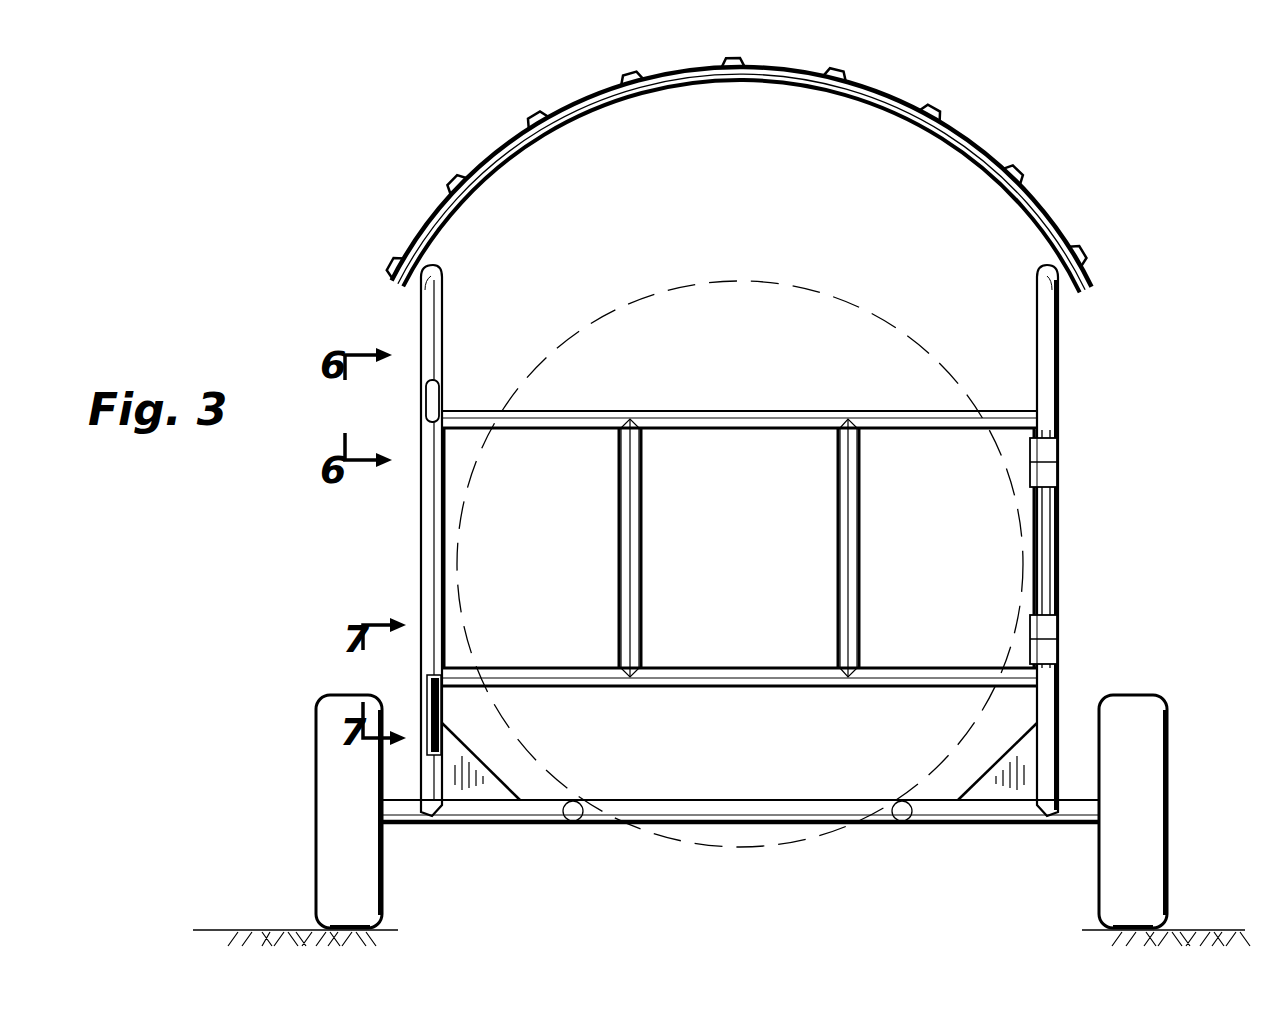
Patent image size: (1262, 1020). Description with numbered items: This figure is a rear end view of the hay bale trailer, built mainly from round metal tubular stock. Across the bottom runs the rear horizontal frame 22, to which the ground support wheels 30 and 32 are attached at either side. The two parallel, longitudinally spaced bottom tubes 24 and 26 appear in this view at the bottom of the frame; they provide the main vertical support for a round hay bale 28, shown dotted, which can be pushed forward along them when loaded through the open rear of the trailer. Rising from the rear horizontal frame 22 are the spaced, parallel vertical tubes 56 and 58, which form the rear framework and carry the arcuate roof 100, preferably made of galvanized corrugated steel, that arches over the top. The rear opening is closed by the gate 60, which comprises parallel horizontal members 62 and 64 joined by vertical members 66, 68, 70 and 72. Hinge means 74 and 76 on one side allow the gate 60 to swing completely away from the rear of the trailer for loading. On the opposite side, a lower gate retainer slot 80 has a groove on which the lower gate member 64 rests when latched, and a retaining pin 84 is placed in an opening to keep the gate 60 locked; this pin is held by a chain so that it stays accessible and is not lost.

The arcuate roof 100 is at (880, 93).
The hay bale 28 is at (790, 307).
The vertical tubing 58 is at (430, 316).
The vertical tubing 56 is at (1045, 358).
The vertical member 72 is at (424, 546).
The retaining pin 84 is at (440, 388).
The lower gate retainer slot 80 is at (440, 672).
The horizontal member 62 is at (803, 414).
The horizontal member 64 is at (668, 676).
The vertical member 70 is at (628, 500).
The vertical member 68 is at (848, 492).
The vertical member 66 is at (1040, 549).
The hinge means 74 is at (1045, 451).
The hinge means 76 is at (1042, 650).
The gate 60 is at (791, 551).
The rear horizontal frame 22 is at (468, 812).
The bottom tube 24 is at (567, 792).
The bottom tube 26 is at (910, 818).
The ground support wheel 30 is at (330, 857).
The ground support wheel 32 is at (1143, 797).